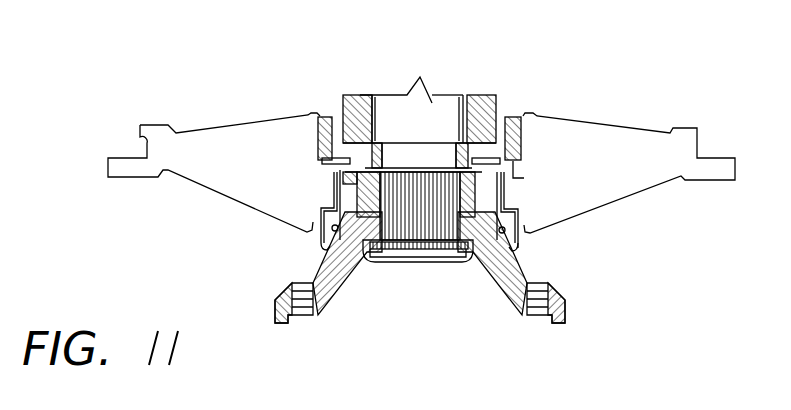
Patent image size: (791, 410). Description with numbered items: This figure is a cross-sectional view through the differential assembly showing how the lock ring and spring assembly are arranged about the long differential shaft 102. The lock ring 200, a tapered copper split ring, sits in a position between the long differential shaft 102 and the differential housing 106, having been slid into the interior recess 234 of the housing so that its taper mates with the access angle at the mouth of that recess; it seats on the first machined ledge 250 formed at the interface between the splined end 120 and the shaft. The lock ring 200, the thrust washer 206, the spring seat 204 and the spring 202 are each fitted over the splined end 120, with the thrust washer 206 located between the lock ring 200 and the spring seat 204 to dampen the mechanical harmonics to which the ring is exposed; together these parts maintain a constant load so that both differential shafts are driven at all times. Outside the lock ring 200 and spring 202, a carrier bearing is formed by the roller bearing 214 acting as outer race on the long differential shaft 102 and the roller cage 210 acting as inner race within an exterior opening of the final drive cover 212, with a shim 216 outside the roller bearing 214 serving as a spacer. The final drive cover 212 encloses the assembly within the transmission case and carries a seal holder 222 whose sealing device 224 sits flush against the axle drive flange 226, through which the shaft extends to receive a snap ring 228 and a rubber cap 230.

The long differential shaft 102 is at (442, 97).
The differential housing 106 is at (536, 93).
The splined end 120 is at (435, 253).
The lock ring 200 is at (383, 102).
The spring 202 is at (582, 210).
The spring seat 204 is at (278, 206).
The thrust washer 206 is at (283, 150).
The roller cage 210 is at (265, 121).
The final drive cover 212 is at (637, 151).
The roller bearing 214 is at (314, 95).
The shim 216 is at (565, 177).
The seal holder 222 is at (568, 214).
The sealing device 224 is at (575, 263).
The axle drive flange 226 is at (305, 329).
The snap ring 228 is at (418, 277).
The rubber cap 230 is at (365, 279).
The interior recess 234 is at (536, 124).
The first machined ledge 250 is at (425, 80).